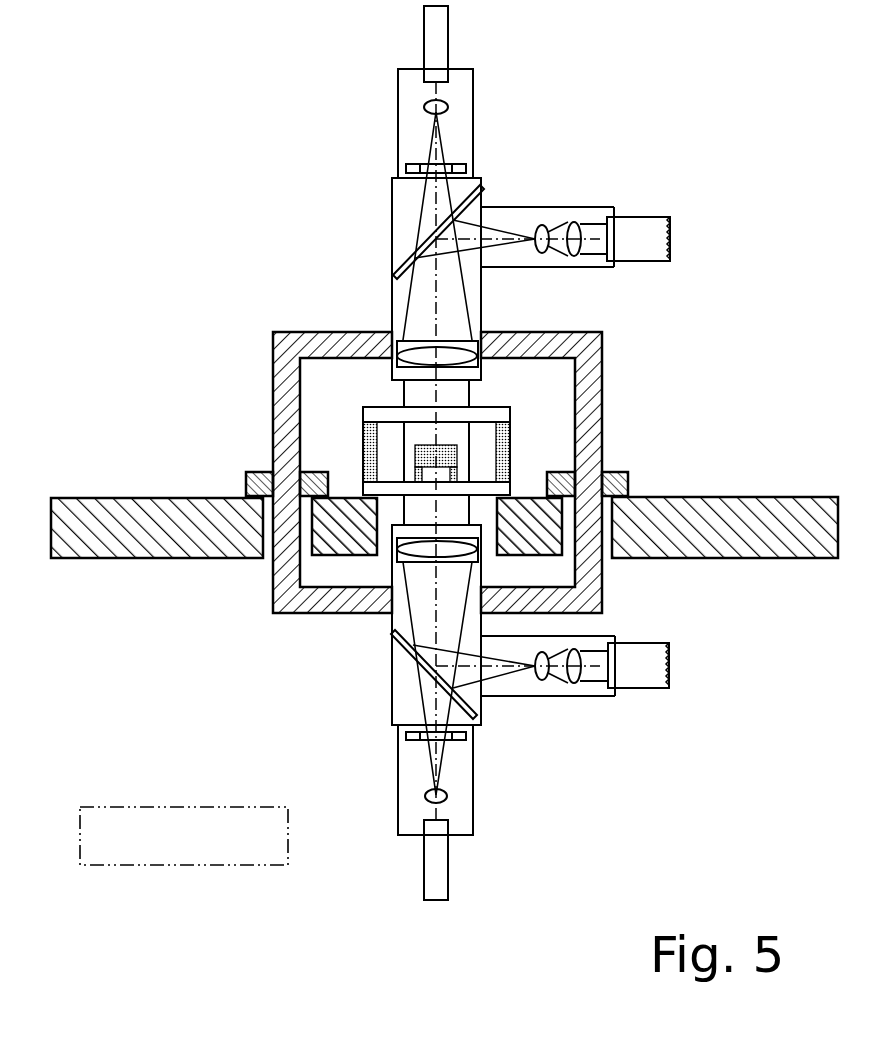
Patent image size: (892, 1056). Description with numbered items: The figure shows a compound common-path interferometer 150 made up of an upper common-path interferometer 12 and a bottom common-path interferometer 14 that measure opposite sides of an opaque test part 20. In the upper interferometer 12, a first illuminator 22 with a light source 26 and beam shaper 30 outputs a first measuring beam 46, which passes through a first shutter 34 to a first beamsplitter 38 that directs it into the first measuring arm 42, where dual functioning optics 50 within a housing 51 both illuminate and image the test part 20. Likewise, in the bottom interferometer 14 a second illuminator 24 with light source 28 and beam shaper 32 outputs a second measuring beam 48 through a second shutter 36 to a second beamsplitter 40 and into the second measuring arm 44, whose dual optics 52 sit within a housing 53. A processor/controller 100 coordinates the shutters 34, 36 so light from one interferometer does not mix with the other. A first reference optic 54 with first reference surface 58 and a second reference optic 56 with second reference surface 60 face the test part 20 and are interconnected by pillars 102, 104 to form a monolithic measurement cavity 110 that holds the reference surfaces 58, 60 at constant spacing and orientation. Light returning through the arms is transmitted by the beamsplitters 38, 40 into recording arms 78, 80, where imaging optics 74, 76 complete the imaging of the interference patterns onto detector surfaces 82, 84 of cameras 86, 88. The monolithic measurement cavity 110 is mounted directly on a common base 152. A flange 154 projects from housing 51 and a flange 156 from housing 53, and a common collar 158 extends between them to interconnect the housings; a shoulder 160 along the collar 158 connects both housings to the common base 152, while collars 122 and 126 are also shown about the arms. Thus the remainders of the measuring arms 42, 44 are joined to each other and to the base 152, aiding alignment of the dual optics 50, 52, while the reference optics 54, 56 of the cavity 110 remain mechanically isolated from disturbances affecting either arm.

The compound common-path interferometer 150 is at (215, 85).
The flange 154 is at (603, 346).
The common collar 158 is at (273, 380).
The pillar 102 is at (288, 416).
The pillar 104 is at (590, 403).
The collar 122 is at (286, 445).
The flange 156 is at (273, 598).
The collar 126 is at (300, 608).
The shoulder 160 is at (246, 480).
The common base 152 is at (127, 558).
The second reference optic 56 is at (500, 490).
The first reference optic 54 is at (490, 413).
The first reference surface 58 is at (388, 426).
The second reference surface 60 is at (388, 463).
The opaque test part 20 is at (457, 455).
The monolithic measurement cavity 110 is at (383, 402).
The light source 26 is at (424, 22).
The first illuminator 22 is at (474, 90).
The beam shaper 30 is at (448, 107).
The first measuring beam 46 is at (420, 148).
The first shutter 34 is at (406, 168).
The first measuring arm 42 is at (392, 236).
The first beamsplitter 38 is at (485, 190).
The dual functioning optics 50 is at (413, 340).
The housing 51 is at (483, 285).
The recording arm 78 is at (566, 203).
The imaging optics 74 is at (575, 255).
The camera 86 is at (647, 212).
The detector surface 82 is at (662, 217).
The upper common-path interferometer 12 is at (240, 240).
The dual functioning optics 52 is at (423, 564).
The second measuring arm 44 is at (392, 690).
The second measuring beam 48 is at (430, 752).
The second beamsplitter 40 is at (482, 727).
The housing 53 is at (483, 622).
The imaging optics 76 is at (543, 682).
The camera 88 is at (647, 688).
The detector surface 84 is at (670, 662).
The recording arm 80 is at (592, 699).
The second shutter 36 is at (405, 735).
The second illuminator 24 is at (397, 803).
The beam shaper 32 is at (447, 797).
The light source 28 is at (424, 866).
The bottom common-path interferometer 14 is at (260, 705).
The processor/controller 100 is at (184, 836).